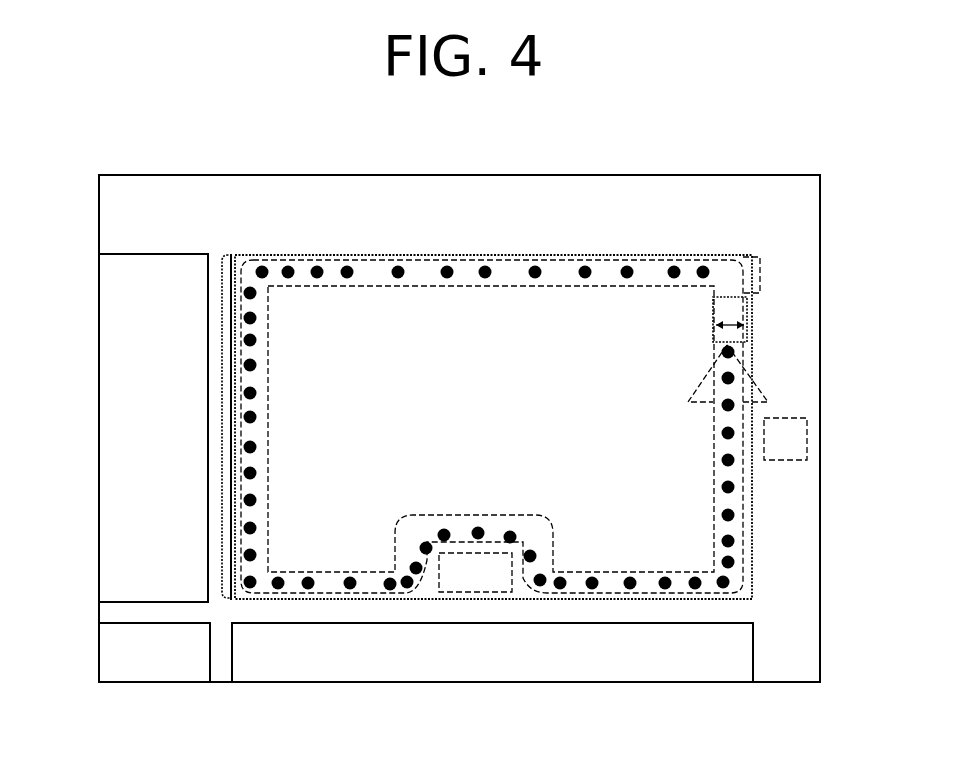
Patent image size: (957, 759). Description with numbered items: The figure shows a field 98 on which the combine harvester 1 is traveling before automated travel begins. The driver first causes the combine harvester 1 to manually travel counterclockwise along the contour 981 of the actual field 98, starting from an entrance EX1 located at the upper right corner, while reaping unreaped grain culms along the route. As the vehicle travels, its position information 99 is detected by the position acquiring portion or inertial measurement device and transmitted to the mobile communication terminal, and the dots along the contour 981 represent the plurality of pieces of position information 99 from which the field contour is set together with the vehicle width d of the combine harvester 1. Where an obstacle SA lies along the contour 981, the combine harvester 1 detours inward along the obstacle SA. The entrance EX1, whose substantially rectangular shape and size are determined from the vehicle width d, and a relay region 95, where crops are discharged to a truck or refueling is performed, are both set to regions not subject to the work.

The combine harvester 1 is at (747, 305).
The position information 99 is at (224, 426).
The contour 981 is at (242, 253).
The field 98 is at (458, 252).
The entrance EX1 is at (760, 263).
The vehicle width d is at (730, 319).
The relay region 95 is at (807, 445).
The obstacle SA is at (480, 593).